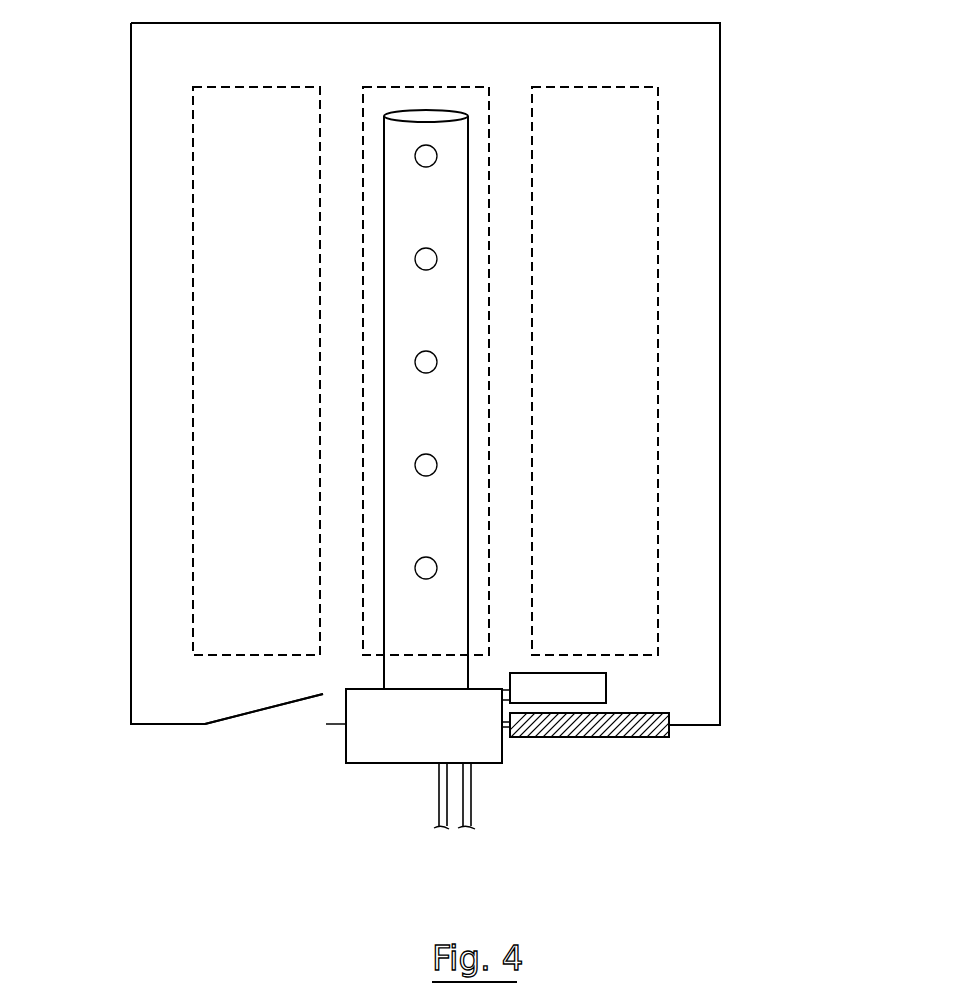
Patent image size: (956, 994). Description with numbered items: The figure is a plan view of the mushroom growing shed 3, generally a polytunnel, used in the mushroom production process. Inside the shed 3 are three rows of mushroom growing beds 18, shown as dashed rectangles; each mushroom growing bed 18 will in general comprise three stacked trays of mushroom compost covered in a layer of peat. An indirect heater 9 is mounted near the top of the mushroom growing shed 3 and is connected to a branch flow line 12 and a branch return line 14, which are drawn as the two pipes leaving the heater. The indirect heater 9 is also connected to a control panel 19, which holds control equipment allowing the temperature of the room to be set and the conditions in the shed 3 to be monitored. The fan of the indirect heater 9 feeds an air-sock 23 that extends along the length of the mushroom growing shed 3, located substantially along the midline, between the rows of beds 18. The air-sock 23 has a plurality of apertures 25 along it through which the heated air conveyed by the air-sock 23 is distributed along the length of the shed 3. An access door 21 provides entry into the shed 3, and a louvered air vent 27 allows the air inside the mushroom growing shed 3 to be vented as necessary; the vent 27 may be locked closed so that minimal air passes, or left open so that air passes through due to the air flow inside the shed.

The mushroom growing shed 3 is at (128, 672).
The indirect heater 9 is at (387, 749).
The branch flow line 12 is at (442, 807).
The branch return line 14 is at (470, 793).
The mushroom growing beds 18 is at (372, 222).
The control panel 19 is at (600, 685).
The access door 21 is at (275, 708).
The air-sock 23 is at (403, 422).
The apertures 25 is at (434, 163).
The louvered air vent 27 is at (553, 728).